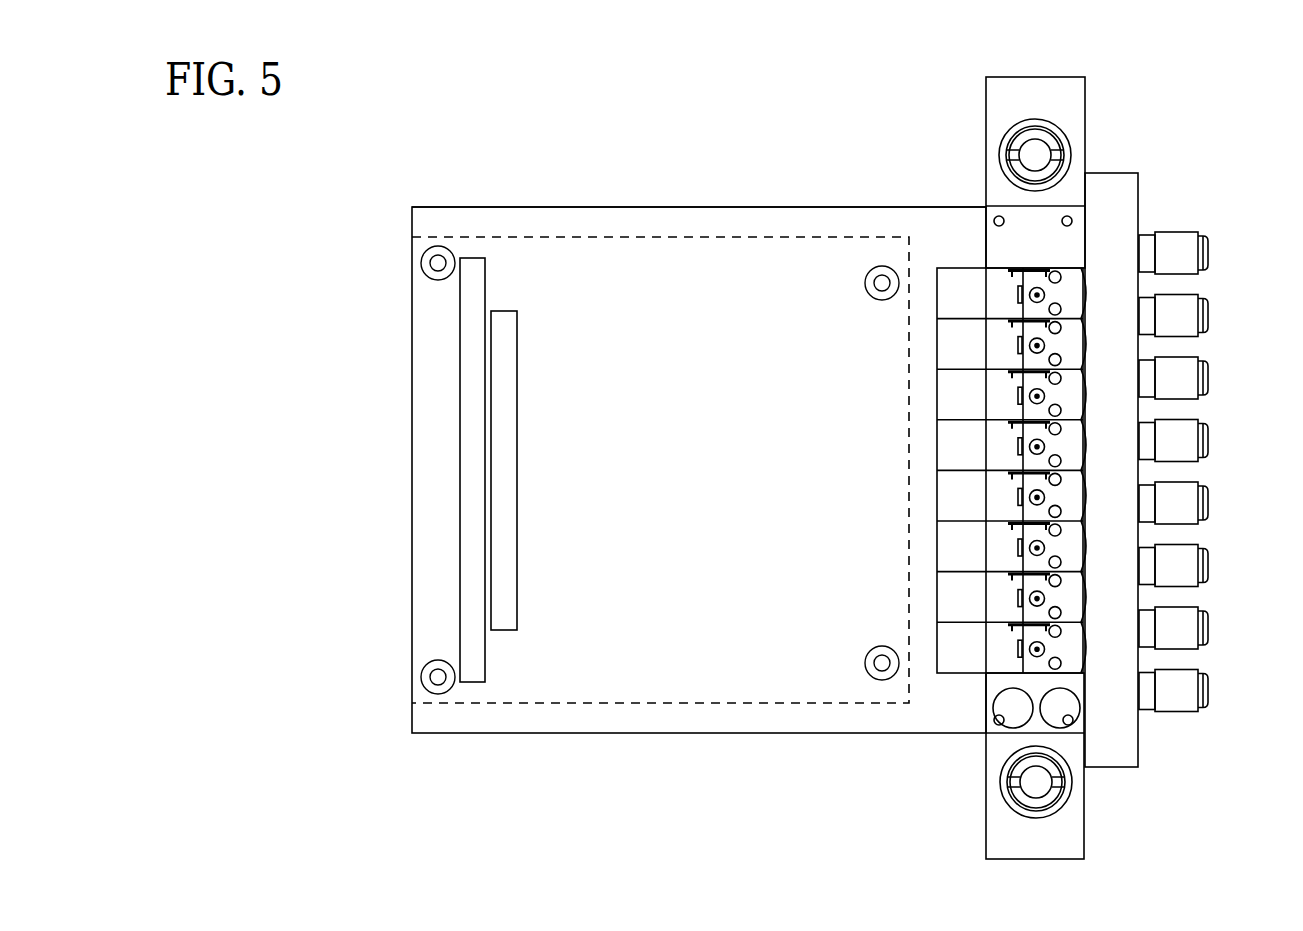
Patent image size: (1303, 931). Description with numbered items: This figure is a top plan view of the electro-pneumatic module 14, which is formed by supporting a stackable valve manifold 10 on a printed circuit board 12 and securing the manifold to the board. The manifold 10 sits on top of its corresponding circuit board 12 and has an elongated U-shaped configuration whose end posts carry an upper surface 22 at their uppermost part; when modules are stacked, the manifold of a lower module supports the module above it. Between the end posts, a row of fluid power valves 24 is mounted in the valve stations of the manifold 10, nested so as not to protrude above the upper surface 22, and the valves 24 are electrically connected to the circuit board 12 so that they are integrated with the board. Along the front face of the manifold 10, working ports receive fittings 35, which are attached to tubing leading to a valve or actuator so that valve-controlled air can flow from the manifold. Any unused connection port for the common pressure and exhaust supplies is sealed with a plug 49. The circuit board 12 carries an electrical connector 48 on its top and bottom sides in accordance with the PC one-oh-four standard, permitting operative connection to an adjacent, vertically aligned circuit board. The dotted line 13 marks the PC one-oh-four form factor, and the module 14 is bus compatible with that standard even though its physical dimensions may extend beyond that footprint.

The stackable valve manifold 10 is at (1075, 455).
The printed circuit board 12 is at (700, 222).
The PC/104 form factor 13 is at (641, 703).
The electro-pneumatic module 14 is at (398, 298).
The upper surface 22 is at (1072, 105).
The fluid power valves 24 is at (962, 283).
The fitting 35 is at (1188, 572).
The electrical connector 48 is at (504, 565).
The plug 49 is at (1000, 786).